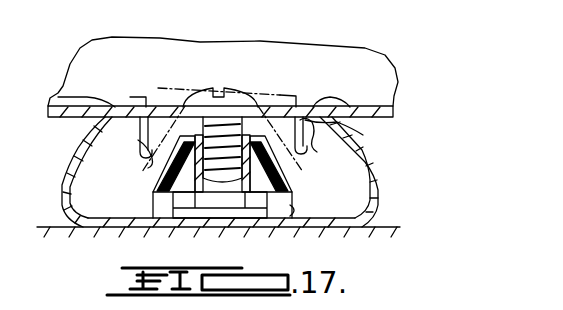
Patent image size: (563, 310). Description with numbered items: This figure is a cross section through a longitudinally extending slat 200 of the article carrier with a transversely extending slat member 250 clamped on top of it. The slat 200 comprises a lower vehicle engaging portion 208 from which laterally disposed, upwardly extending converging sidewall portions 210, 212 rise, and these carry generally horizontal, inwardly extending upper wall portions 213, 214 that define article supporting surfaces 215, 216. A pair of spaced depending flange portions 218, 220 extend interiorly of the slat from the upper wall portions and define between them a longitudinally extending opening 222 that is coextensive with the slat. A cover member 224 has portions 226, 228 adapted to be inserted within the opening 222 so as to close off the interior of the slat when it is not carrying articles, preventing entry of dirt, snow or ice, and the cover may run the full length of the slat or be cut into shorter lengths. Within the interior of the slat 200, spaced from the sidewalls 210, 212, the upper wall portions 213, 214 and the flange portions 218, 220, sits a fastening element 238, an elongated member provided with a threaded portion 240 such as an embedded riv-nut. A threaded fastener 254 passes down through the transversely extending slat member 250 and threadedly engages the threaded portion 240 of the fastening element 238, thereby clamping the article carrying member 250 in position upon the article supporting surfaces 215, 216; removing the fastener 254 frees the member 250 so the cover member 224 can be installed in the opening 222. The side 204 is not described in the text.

The slat 200 is at (60, 197).
The housing side 204 is at (390, 217).
The lower vehicle engaging portion 208 is at (127, 225).
The sidewall portion 210 is at (77, 156).
The sidewall portion 212 is at (363, 166).
The upper wall portion 213 is at (127, 118).
The upper wall portion 214 is at (313, 106).
The article supporting surface 215 is at (62, 92).
The article supporting surface 216 is at (340, 120).
The depending flange portion 218 is at (140, 134).
The depending flange portion 220 is at (303, 140).
The longitudinally extending opening 222 is at (187, 100).
The cover member 224 is at (205, 88).
The cover member portion 226 is at (146, 178).
The cover member portion 228 is at (288, 182).
The fastening element 238 is at (290, 212).
The threaded portion 240 is at (212, 165).
The transversely extending slat member 250 is at (370, 66).
The threaded fastener 254 is at (240, 96).